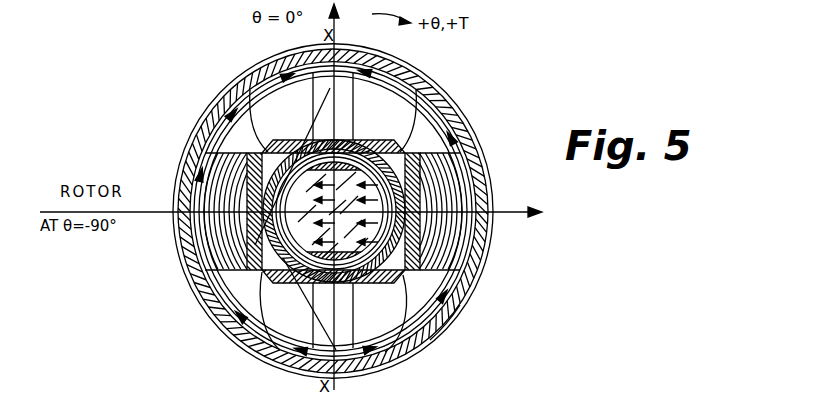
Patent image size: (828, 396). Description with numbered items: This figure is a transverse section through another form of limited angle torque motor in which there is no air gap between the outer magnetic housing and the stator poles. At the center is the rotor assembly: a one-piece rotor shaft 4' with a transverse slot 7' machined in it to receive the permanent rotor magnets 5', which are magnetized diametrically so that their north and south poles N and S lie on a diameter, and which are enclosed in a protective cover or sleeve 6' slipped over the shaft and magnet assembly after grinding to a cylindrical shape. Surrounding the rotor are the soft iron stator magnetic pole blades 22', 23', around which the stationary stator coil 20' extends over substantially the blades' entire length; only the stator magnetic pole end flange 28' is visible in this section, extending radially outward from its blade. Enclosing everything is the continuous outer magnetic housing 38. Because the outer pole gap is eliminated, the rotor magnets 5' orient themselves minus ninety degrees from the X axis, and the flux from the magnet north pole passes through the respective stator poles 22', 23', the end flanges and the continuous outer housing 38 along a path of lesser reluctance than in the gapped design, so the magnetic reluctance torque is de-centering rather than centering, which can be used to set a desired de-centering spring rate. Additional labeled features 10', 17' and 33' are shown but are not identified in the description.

The rotor shaft 4' is at (334, 311).
The permanent rotor magnets 5' is at (334, 182).
The protective cover or sleeve 6' is at (334, 196).
The transverse slot 7' is at (333, 158).
The right stator pole winding 10' is at (467, 211).
The housing 17' is at (334, 211).
The stator coil 20' is at (330, 211).
The stator magnetic pole blade 22' is at (214, 251).
The stator magnetic pole blade 23' is at (383, 225).
The stator magnetic pole end flange 28' is at (327, 211).
The winding end turn 33' is at (353, 326).
The continuous outer magnetic housing 38 is at (458, 305).